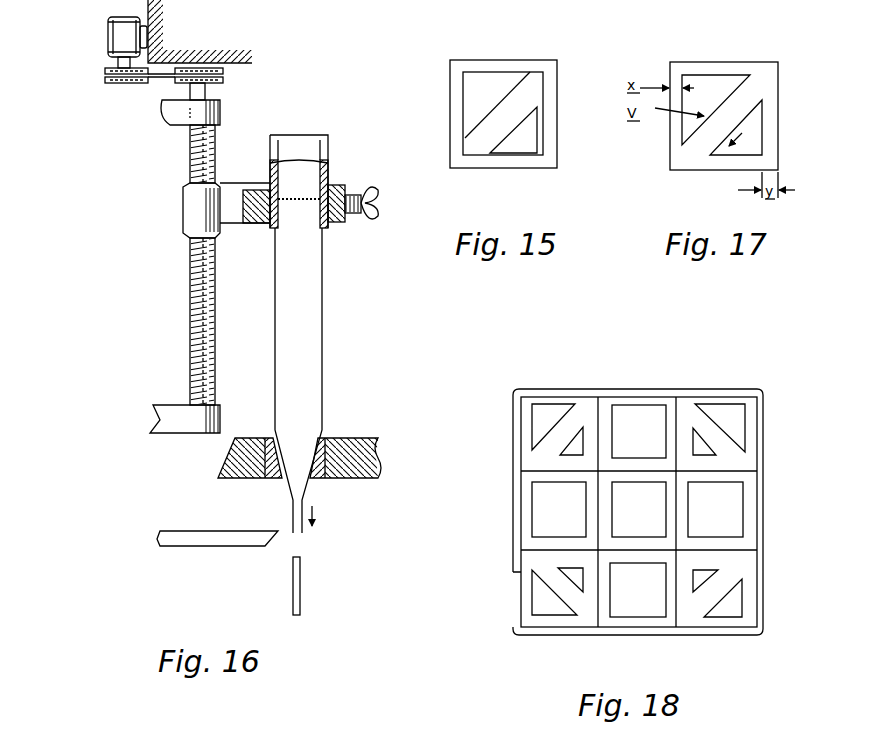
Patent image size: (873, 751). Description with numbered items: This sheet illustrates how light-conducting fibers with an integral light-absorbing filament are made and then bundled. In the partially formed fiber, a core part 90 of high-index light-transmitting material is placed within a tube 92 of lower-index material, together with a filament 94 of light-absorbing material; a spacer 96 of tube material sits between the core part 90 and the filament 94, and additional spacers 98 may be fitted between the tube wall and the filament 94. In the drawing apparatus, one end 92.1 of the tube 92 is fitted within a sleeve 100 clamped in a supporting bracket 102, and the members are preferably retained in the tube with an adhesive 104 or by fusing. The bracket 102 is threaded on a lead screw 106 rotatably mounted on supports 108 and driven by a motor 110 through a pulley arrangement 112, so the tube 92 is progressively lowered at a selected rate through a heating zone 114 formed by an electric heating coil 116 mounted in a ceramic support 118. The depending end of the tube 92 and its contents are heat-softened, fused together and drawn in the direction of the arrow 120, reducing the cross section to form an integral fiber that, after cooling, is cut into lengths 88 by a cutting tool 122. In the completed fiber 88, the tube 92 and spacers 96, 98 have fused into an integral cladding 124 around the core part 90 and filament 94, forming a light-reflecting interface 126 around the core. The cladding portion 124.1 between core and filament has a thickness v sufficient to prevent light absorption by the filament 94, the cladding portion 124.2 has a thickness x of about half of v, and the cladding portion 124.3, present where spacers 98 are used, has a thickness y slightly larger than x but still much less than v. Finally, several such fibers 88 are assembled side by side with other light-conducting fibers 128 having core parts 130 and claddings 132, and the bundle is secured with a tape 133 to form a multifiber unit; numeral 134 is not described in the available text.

In FIG. 16, the square fiber 88 is at (300, 592).
In FIG. 17, the square fiber 88 is at (720, 56).
In FIG. 18, the square fiber 88 is at (579, 406).
In FIG. 15, the core part 90 is at (488, 83).
In FIG. 17, the core part 90 is at (697, 80).
In FIG. 18, the core part 90 is at (728, 416).
In FIG. 16, the tube 92 is at (312, 318).
In FIG. 15, the tube 92 is at (456, 64).
In FIG. 16, the end of the tube 92.1 is at (302, 220).
In FIG. 15, the filament 94 is at (522, 128).
In FIG. 17, the filament 94 is at (752, 129).
In FIG. 18, the filament 94 is at (700, 446).
In FIG. 15, the spacer 96 is at (483, 127).
In FIG. 15, the additional spacers 98 is at (545, 133).
In FIG. 16, the sleeve 100 is at (300, 144).
In FIG. 16, the supporting bracket 102 is at (236, 196).
In FIG. 16, the adhesive 104 is at (304, 198).
In FIG. 16, the lead screw 106 is at (190, 277).
In FIG. 16, the supports 108 is at (171, 127).
In FIG. 16, the motor 110 is at (104, 42).
In FIG. 16, the pulley arrangement 112 is at (133, 87).
In FIG. 16, the heating zone 114 is at (320, 466).
In FIG. 16, the electric heating coil 116 is at (333, 438).
In FIG. 16, the ceramic support 118 is at (355, 452).
In FIG. 16, the arrow 120 is at (314, 508).
In FIG. 16, the cutting tool 122 is at (217, 541).
In FIG. 17, the cladding 124 is at (764, 86).
In FIG. 17, the cladding portion 124.1 is at (710, 128).
In FIG. 17, the cladding portion 124.2 is at (673, 80).
In FIG. 17, the cladding portion 124.3 is at (773, 135).
In FIG. 17, the light-reflecting interface 126 is at (730, 92).
In FIG. 18, the other light-conducting fibers 128 is at (630, 420).
In FIG. 18, the core parts 130 is at (648, 420).
In FIG. 18, the claddings 132 is at (605, 402).
In FIG. 18, the tape 133 is at (532, 397).
In FIG. 16, the element 134 is at (258, 747).